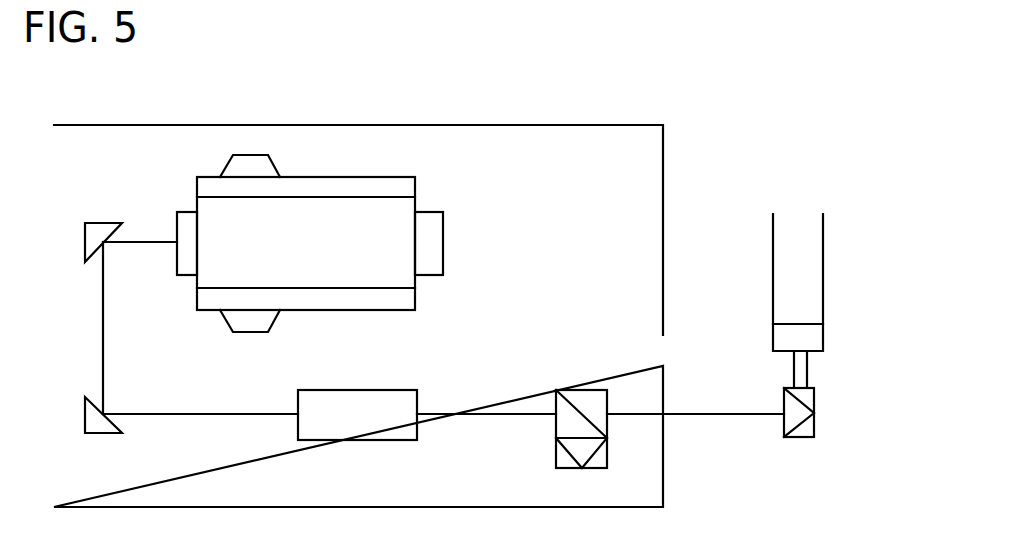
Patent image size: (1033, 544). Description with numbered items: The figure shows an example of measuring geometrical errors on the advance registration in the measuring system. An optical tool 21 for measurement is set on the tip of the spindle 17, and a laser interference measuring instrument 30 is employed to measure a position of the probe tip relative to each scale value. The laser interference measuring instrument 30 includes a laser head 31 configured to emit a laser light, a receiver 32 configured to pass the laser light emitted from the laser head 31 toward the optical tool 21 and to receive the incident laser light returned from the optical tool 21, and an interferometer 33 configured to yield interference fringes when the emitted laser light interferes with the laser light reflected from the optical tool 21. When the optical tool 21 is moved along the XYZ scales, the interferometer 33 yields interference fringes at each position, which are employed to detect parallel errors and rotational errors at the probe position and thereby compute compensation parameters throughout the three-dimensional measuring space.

The spindle 17 is at (815, 263).
The optical tool 21 is at (815, 422).
The laser interference measuring instrument 30 is at (517, 123).
The laser head 31 is at (388, 177).
The receiver 32 is at (348, 390).
The interferometer 33 is at (572, 390).